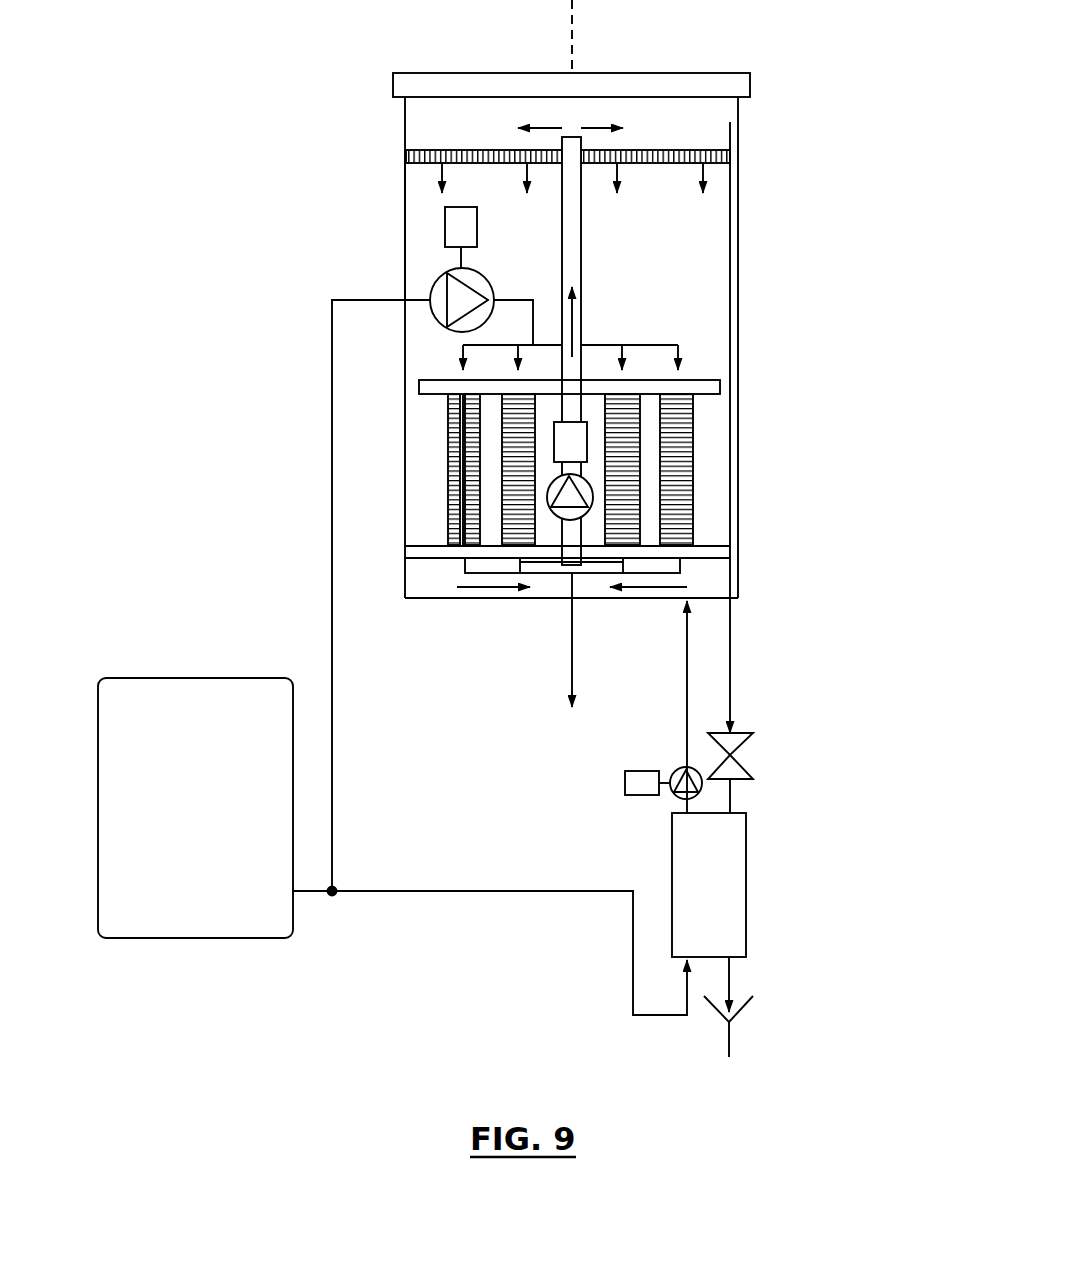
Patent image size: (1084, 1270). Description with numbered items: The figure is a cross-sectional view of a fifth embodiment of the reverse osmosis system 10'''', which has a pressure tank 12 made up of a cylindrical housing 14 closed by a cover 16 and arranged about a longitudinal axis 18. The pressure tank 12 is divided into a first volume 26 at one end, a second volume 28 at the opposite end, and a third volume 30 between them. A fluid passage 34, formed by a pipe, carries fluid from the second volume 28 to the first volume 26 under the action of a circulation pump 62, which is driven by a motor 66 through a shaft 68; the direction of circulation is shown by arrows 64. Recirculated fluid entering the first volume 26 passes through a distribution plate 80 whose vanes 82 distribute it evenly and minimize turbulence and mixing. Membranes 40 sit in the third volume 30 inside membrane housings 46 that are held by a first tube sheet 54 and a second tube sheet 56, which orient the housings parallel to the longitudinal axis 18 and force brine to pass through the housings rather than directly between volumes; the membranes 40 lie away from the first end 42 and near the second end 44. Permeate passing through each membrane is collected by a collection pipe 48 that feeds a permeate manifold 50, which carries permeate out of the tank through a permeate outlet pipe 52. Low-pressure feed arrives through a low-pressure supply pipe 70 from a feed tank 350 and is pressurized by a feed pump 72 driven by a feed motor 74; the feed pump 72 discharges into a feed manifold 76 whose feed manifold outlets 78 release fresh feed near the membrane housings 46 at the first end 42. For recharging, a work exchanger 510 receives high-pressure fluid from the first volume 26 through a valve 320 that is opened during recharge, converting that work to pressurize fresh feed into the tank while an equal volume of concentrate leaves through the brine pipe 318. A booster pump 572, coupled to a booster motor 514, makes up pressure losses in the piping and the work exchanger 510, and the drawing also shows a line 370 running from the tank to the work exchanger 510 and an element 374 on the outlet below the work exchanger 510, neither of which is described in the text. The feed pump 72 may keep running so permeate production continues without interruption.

The reverse osmosis system 10'''' is at (341, 36).
The pressure tank 12 is at (399, 102).
The housing 14 is at (404, 180).
The cover 16 is at (418, 80).
The longitudinal axis 18 is at (577, 8).
The first volume 26 is at (640, 120).
The second volume 28 is at (428, 587).
The third volume 30 is at (707, 223).
The fluid passage 34 is at (583, 252).
The membranes 40 is at (455, 424).
The first end 42 is at (718, 192).
The second end 44 is at (707, 525).
The membrane housing 46 is at (695, 421).
The collection pipe 48 is at (462, 450).
The permeate manifold 50 is at (540, 575).
The permeate outlet pipe 52 is at (574, 686).
The first tube sheet 54 is at (720, 388).
The second tube sheet 56 is at (730, 552).
The circulation pump 62 is at (592, 500).
The arrows 64 is at (548, 124).
The motor 66 is at (553, 433).
The shaft 68 is at (560, 468).
The low-pressure supply pipe 70 is at (356, 299).
The feed pump 72 is at (483, 279).
The feed motor 74 is at (444, 212).
The feed manifold 76 is at (530, 299).
The feed manifold outlets 78 is at (460, 358).
The distribution plate 80 is at (470, 150).
The vanes 82 is at (515, 150).
The brine pipe 318 is at (731, 272).
The valve 320 is at (746, 738).
The feed tank 350 is at (196, 940).
The return conduit 370 is at (686, 742).
The check valve 374 is at (742, 1000).
The work exchanger 510 is at (747, 883).
The booster motor 514 is at (625, 786).
The booster pump 572 is at (676, 796).